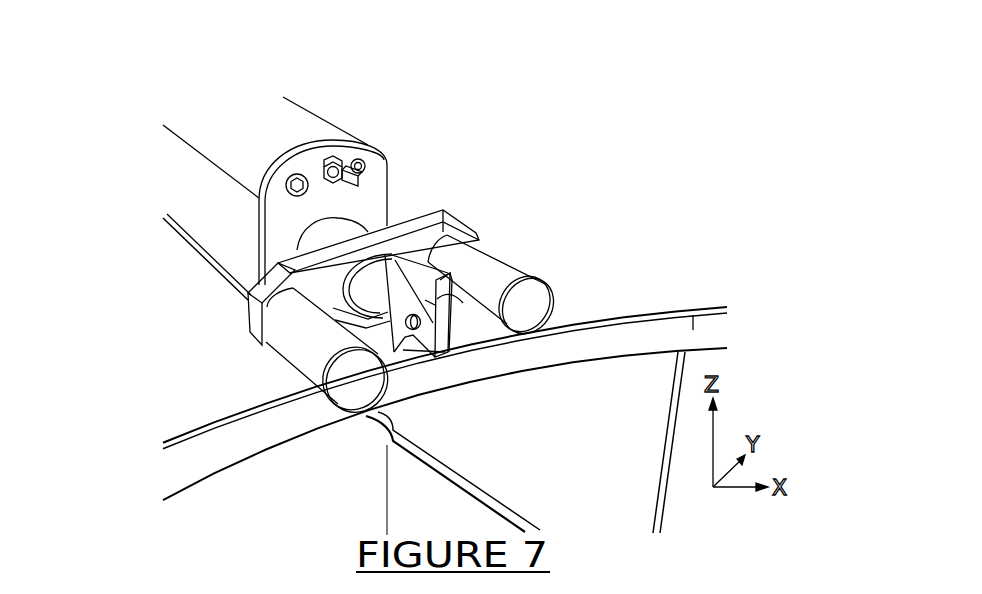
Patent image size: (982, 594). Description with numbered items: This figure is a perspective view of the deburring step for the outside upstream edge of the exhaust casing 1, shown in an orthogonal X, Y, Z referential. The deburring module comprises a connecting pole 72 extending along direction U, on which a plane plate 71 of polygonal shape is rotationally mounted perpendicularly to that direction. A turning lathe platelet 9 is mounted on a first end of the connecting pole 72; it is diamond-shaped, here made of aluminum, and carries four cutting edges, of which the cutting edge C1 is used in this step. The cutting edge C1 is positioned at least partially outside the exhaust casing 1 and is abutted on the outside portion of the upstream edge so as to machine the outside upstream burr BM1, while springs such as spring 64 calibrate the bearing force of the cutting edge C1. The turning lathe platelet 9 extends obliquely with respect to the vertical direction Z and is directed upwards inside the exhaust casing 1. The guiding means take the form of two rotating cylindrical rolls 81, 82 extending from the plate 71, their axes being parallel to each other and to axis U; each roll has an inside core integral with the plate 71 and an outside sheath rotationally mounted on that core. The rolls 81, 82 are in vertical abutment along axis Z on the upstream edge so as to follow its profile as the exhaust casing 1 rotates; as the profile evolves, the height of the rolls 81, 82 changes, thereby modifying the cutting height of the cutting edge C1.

The exhaust casing 1 is at (693, 315).
The turning lathe platelet 9 is at (393, 262).
The spring 64 is at (331, 162).
The plane plate 71 is at (442, 210).
The connecting pole 72 is at (455, 327).
The rotating cylindrical roll 81 is at (497, 256).
The rotating cylindrical roll 82 is at (320, 362).
The outside upstream burr BM1 is at (607, 300).
The cutting edge C1 is at (407, 352).